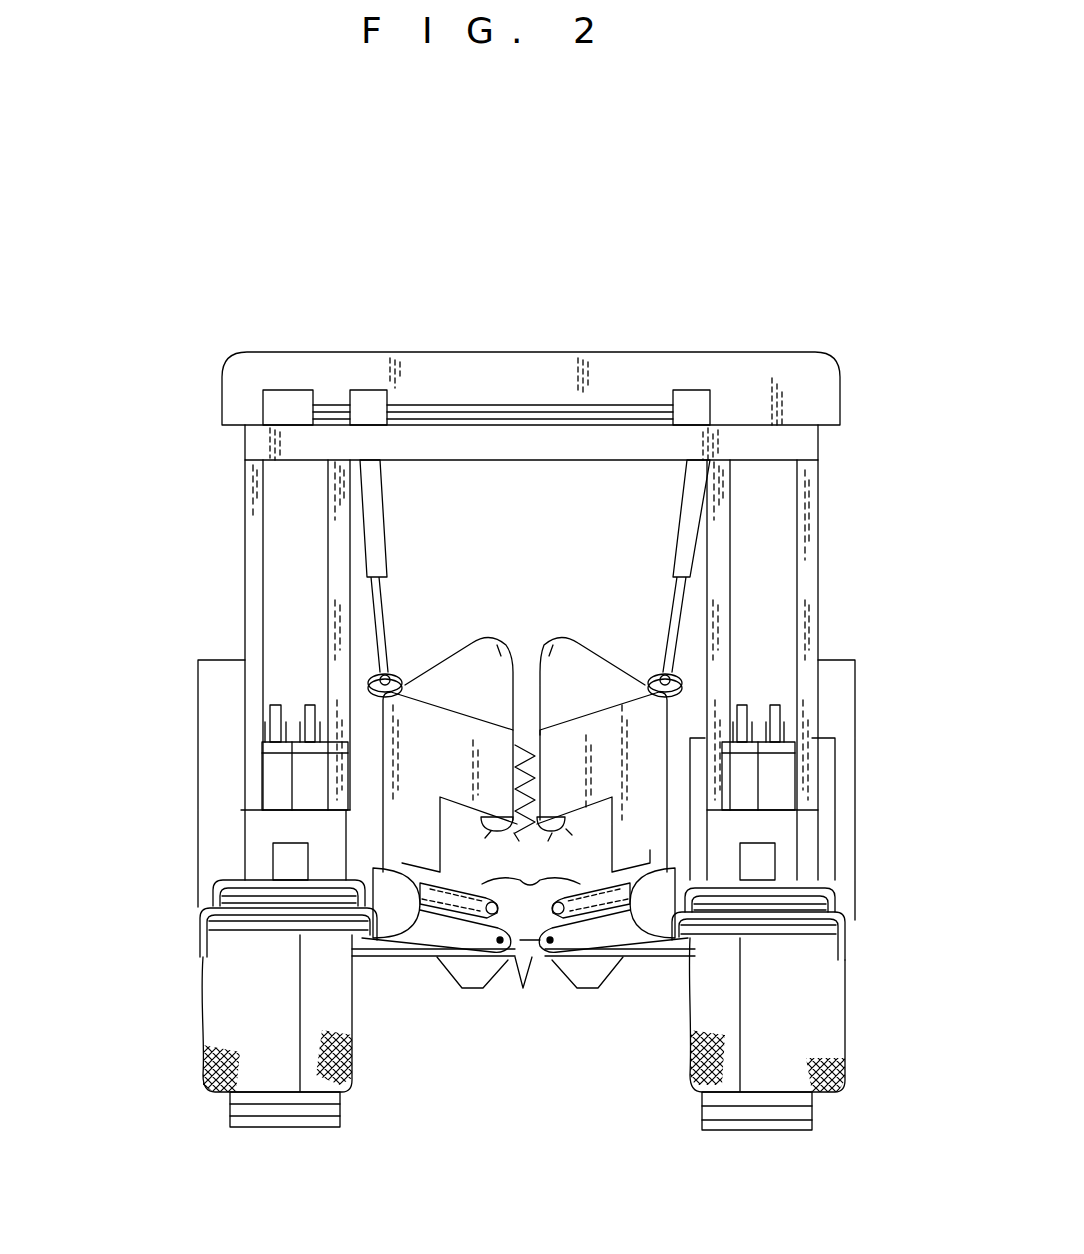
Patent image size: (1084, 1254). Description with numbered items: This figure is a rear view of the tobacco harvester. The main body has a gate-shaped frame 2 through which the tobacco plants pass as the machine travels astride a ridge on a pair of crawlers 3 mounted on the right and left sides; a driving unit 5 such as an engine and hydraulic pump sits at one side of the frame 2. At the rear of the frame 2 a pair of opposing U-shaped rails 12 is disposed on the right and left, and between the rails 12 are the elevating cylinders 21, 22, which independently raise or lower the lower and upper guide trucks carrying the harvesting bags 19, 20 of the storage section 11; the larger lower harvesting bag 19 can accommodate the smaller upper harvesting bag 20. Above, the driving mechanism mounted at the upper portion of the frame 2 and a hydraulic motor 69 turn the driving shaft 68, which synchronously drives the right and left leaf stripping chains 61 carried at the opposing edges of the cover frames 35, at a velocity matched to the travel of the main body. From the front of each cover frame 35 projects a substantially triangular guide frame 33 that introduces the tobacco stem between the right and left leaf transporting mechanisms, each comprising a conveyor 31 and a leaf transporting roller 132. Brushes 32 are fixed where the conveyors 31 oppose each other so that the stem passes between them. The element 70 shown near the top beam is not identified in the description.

The frame 2 is at (243, 512).
The crawlers 3 is at (300, 1128).
The driving unit 5 is at (822, 802).
The storage section 11 is at (178, 1016).
The rails 12 is at (340, 612).
The harvesting bag 19 is at (215, 1075).
The harvesting bag 20 is at (355, 1035).
The elevating cylinder 21 is at (305, 792).
The elevating cylinder 22 is at (270, 770).
The conveyor 31 is at (457, 932).
The brushes 32 is at (532, 962).
The guide frame 33 is at (562, 651).
The cover frame 35 is at (425, 717).
The leaf stripping chain 61 is at (515, 778).
The driving shaft 68 is at (382, 587).
The hydraulic motor 69 is at (287, 407).
The top beam 70 is at (540, 380).
The leaf transporting roller 132 is at (527, 846).